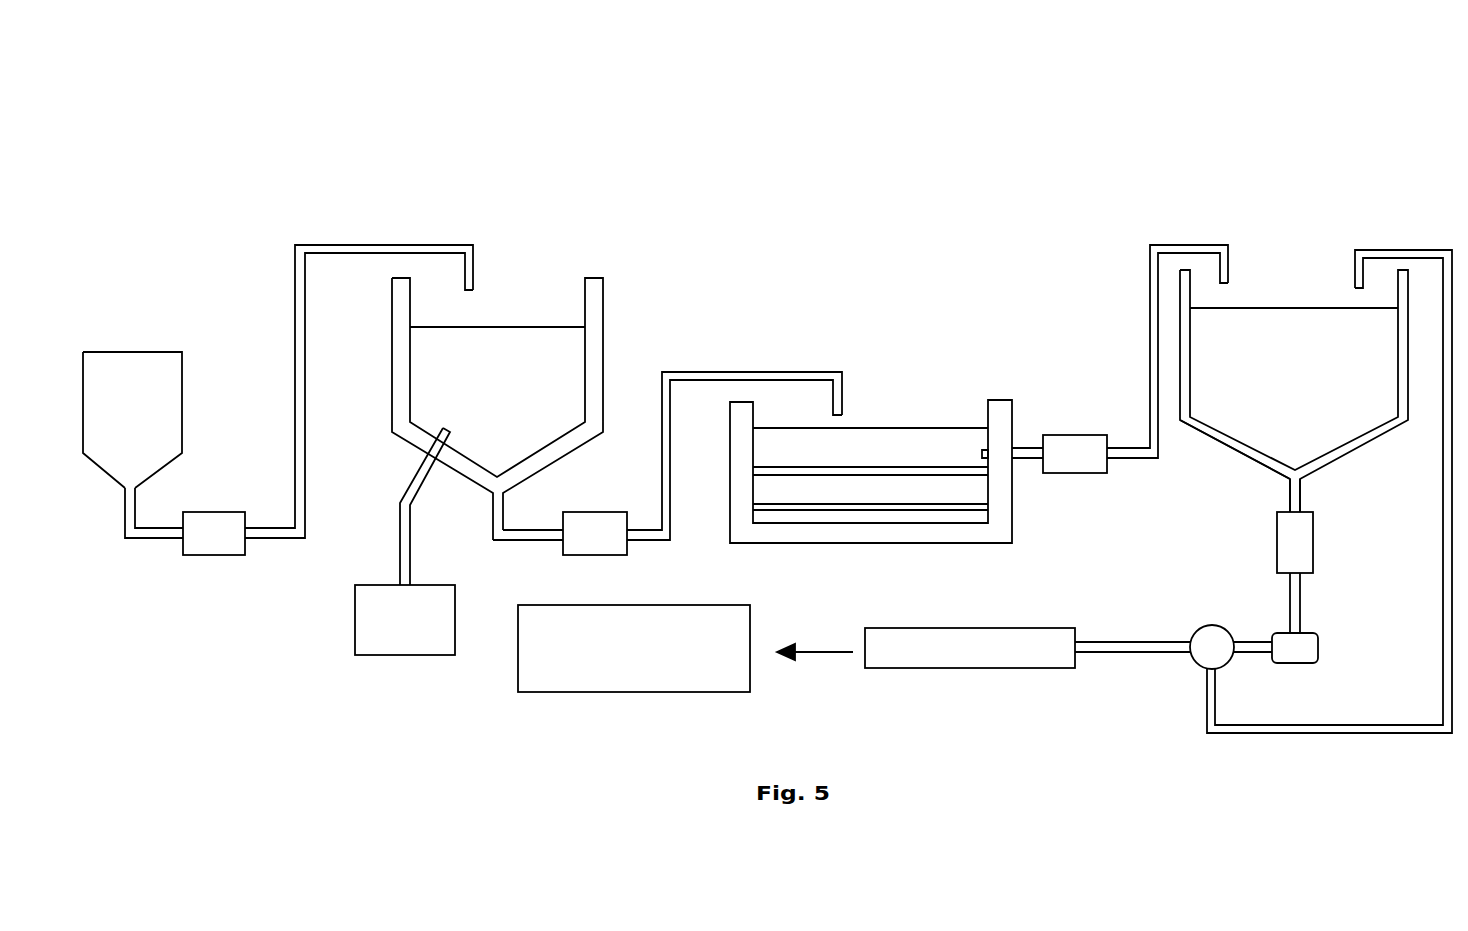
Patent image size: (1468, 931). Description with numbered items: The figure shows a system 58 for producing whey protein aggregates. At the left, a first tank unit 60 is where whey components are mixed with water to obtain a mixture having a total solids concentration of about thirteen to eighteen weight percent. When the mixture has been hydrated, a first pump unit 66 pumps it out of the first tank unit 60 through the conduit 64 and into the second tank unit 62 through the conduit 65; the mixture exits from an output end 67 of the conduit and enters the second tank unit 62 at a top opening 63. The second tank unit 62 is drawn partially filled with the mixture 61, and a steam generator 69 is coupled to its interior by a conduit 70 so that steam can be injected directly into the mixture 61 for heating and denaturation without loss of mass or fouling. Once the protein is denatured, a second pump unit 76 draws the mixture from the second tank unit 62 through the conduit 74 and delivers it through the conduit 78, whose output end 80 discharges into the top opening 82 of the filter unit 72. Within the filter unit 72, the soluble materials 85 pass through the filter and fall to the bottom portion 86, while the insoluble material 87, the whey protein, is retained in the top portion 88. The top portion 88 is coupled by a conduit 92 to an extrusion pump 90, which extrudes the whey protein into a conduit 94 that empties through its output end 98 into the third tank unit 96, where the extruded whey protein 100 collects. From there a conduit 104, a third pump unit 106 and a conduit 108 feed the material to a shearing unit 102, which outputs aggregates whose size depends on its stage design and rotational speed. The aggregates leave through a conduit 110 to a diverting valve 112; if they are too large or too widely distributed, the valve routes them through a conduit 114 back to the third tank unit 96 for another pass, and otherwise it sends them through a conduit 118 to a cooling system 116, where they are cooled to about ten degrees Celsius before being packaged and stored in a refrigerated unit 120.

The system 58 is at (381, 124).
The first tank unit 60 is at (183, 383).
The mixture 61 is at (542, 325).
The second tank unit 62 is at (605, 292).
The top opening 63 is at (526, 268).
The conduit 64 is at (145, 540).
The conduit 65 is at (268, 540).
The first pump unit 66 is at (218, 508).
The output end 67 is at (472, 290).
The steam generator 69 is at (460, 590).
The conduit 70 is at (405, 497).
The filter unit 72 is at (998, 400).
The conduit 74 is at (528, 540).
The second pump unit 76 is at (597, 512).
The conduit 78 is at (653, 543).
The output end 80 is at (837, 415).
The top opening 82 is at (927, 390).
The soluble materials 85 is at (850, 505).
The bottom portion 86 is at (932, 515).
The insoluble material 87 is at (813, 427).
The top portion 88 is at (938, 448).
The extrusion pump 90 is at (1082, 435).
The conduit 92 is at (1023, 447).
The conduit 94 is at (1150, 322).
The third tank unit 96 is at (1223, 443).
The output end 98 is at (1228, 283).
The extruded whey protein 100 is at (1293, 307).
The shearing unit 102 is at (1320, 650).
The conduit 104 is at (1300, 497).
The third pump unit 106 is at (1317, 532).
The conduit 108 is at (1302, 612).
The conduit 110 is at (1258, 640).
The diverting valve 112 is at (1207, 623).
The conduit 114 is at (1237, 735).
The cooling system 116 is at (998, 625).
The conduit 118 is at (1130, 642).
The refrigerated unit 120 is at (632, 693).